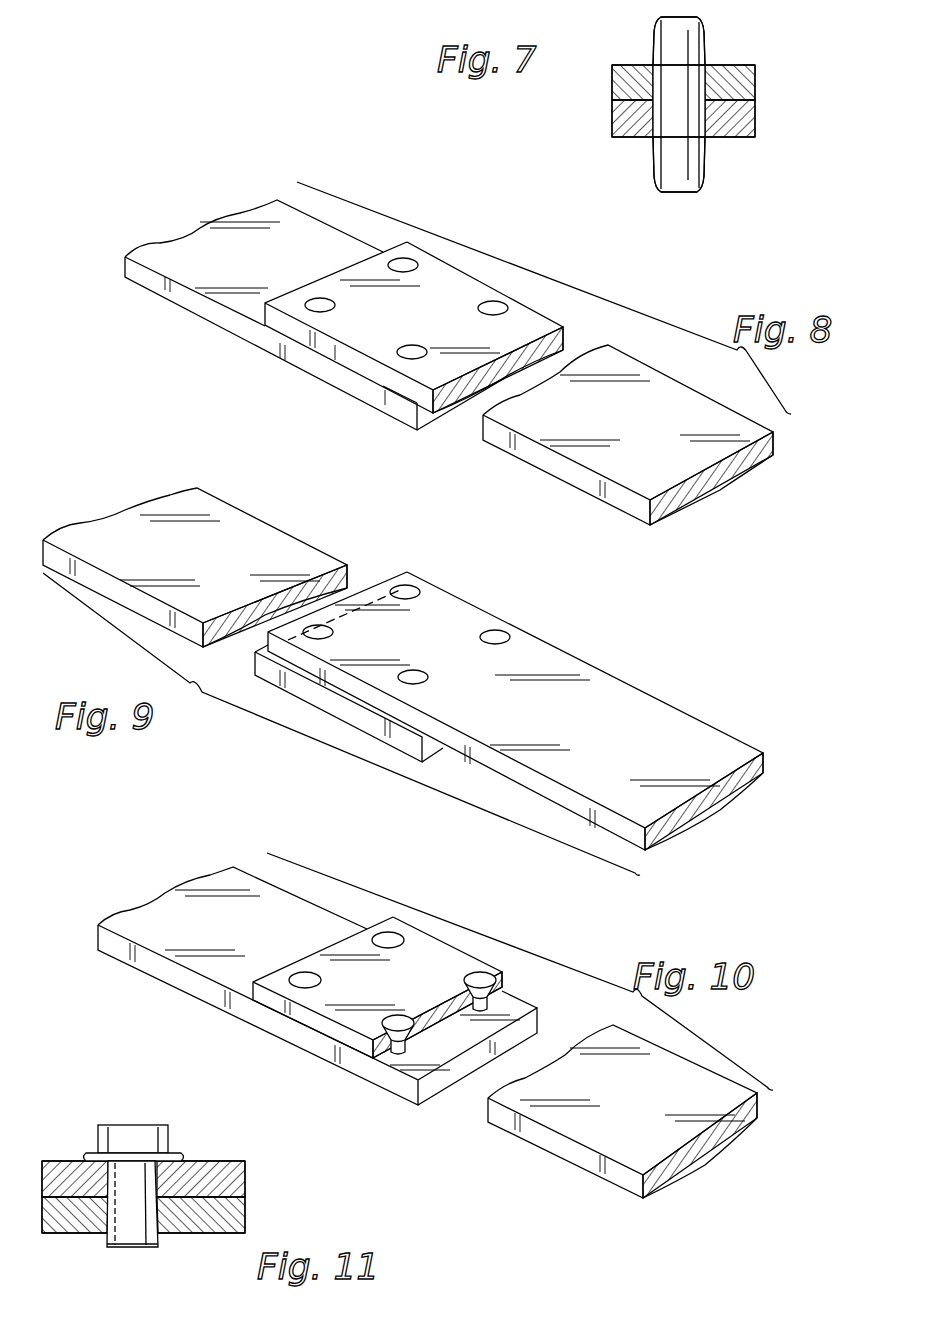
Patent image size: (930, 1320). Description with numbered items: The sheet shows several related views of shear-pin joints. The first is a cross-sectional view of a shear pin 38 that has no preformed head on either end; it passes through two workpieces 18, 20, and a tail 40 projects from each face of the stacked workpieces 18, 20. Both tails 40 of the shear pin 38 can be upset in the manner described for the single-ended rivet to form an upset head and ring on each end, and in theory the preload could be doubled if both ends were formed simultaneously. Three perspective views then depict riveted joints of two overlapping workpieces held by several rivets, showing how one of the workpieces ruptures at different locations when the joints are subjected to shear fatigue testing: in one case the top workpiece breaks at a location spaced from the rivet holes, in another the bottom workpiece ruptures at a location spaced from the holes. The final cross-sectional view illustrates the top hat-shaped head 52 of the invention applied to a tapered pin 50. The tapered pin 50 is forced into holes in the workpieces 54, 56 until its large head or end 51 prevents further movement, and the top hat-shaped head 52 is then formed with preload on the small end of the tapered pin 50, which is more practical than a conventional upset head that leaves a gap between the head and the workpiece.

In FIG. 7, the workpiece 18 is at (612, 82).
In FIG. 7, the workpiece 20 is at (618, 125).
In FIG. 7, the shear pin 38 is at (707, 60).
In FIG. 7, the tail 40 is at (697, 38).
In FIG. 11, the tapered pin 50 is at (150, 1227).
In FIG. 11, the large head or end 51 is at (127, 1242).
In FIG. 11, the top hat-shaped head 52 is at (142, 1138).
In FIG. 11, the workpiece 54 is at (238, 1178).
In FIG. 11, the workpiece 56 is at (232, 1220).